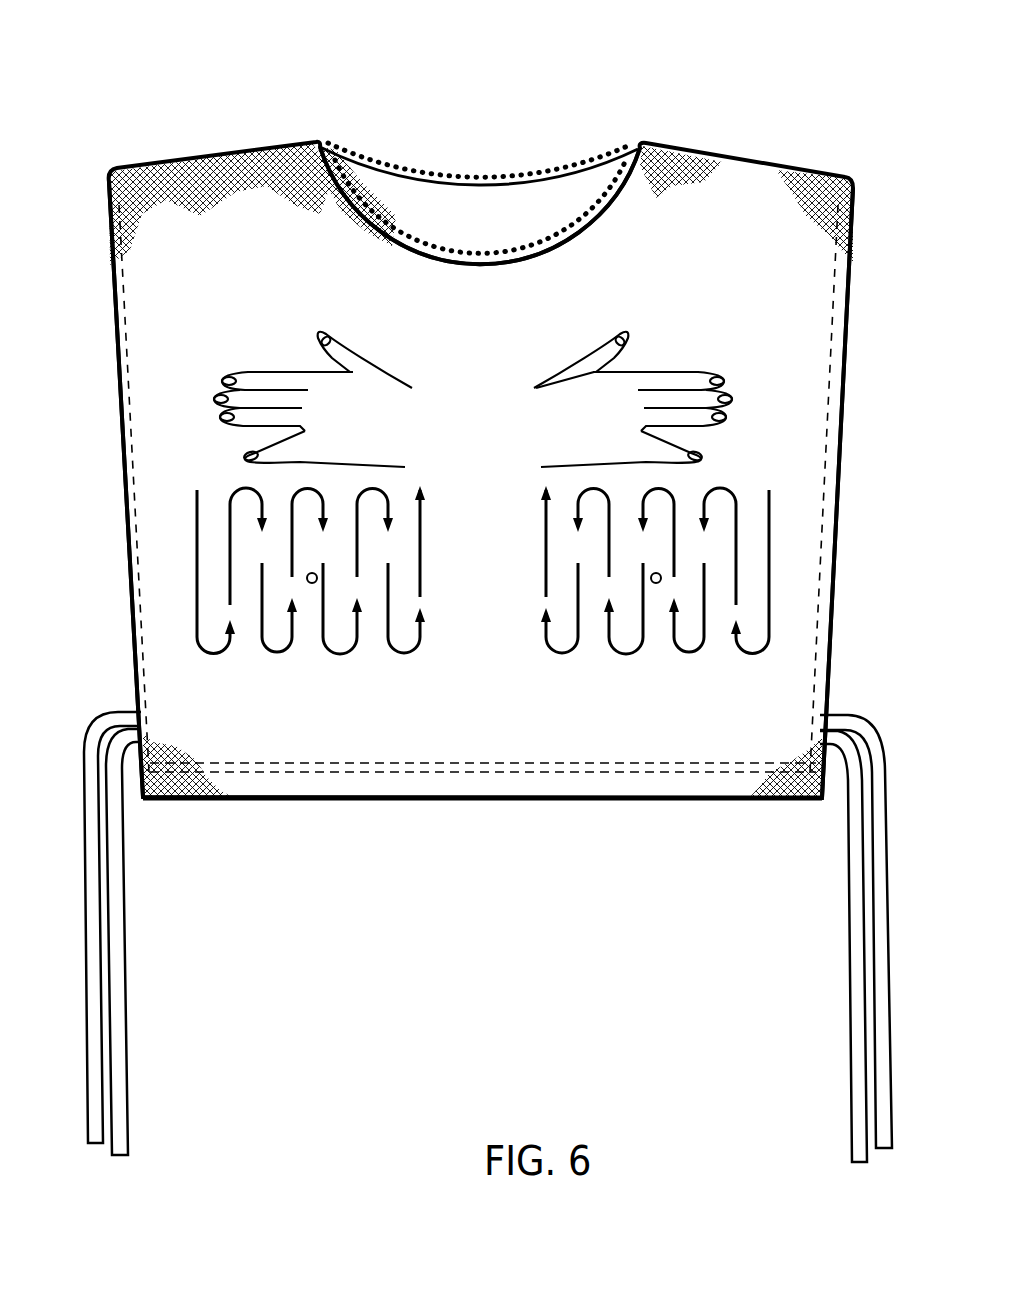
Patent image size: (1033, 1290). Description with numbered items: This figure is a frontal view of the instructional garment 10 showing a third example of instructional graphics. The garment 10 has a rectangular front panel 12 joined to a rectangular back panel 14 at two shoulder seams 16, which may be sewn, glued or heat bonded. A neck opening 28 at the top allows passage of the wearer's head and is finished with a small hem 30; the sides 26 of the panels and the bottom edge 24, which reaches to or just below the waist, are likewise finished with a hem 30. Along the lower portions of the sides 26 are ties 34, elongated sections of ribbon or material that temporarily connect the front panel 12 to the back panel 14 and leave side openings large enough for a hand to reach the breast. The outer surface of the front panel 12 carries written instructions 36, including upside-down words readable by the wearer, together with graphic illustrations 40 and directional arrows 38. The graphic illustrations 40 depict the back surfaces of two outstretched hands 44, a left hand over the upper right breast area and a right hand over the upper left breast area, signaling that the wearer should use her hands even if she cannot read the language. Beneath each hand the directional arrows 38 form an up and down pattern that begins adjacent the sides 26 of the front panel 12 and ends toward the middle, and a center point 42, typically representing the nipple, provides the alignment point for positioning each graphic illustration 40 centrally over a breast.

The instructional garment 10 is at (240, 120).
The front panel 12 is at (692, 165).
The back panel 14 is at (549, 206).
The shoulder seams 16 is at (157, 168).
The bottom edge 24 is at (581, 800).
The sides 26 is at (134, 660).
The neck opening 28 is at (480, 216).
The hem 30 is at (415, 182).
The ties 34 is at (128, 1010).
The instructions 36 is at (744, 348).
The directional arrows 38 is at (197, 532).
The graphic illustrations 40 is at (312, 583).
The center point 42 is at (656, 583).
The hands 44 is at (222, 395).